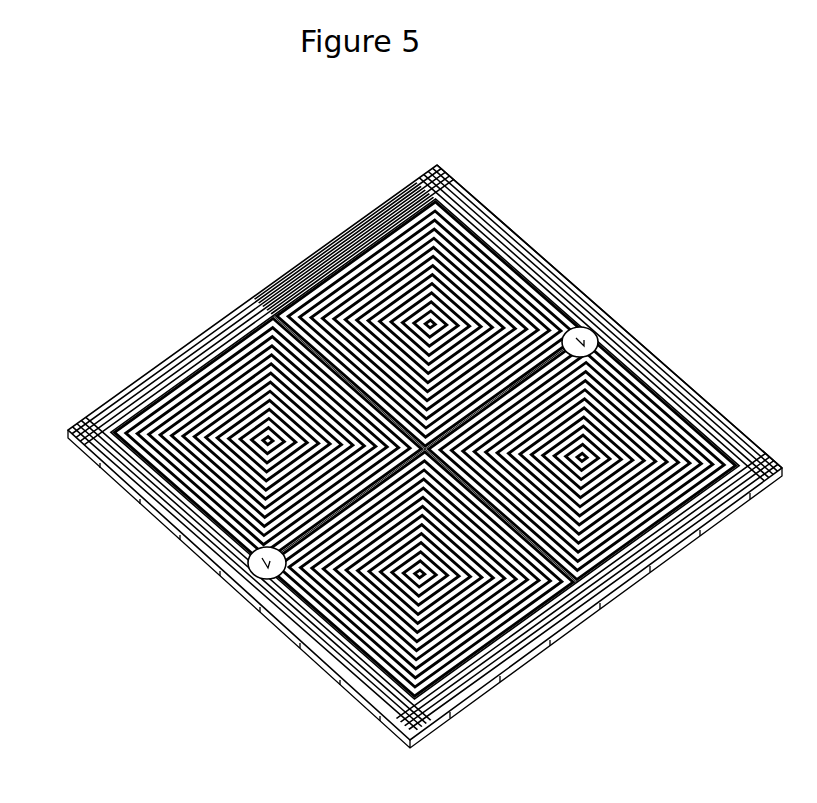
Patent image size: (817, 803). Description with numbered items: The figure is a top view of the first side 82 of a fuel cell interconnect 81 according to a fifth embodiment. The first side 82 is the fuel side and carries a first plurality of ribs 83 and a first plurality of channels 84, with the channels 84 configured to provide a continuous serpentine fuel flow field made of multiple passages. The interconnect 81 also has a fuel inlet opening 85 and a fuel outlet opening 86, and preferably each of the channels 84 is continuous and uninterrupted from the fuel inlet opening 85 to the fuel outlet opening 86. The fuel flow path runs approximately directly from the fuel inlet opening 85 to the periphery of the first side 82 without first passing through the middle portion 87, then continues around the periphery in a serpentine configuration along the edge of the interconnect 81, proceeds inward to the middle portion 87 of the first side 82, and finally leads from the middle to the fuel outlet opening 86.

The interconnect 81 is at (474, 140).
The first side 82 is at (719, 384).
The first plurality of ribs 83 is at (515, 226).
The first plurality of channels 84 is at (541, 251).
The fuel inlet opening 85 is at (255, 577).
The fuel outlet opening 86 is at (596, 333).
The middle portion 87 is at (620, 595).